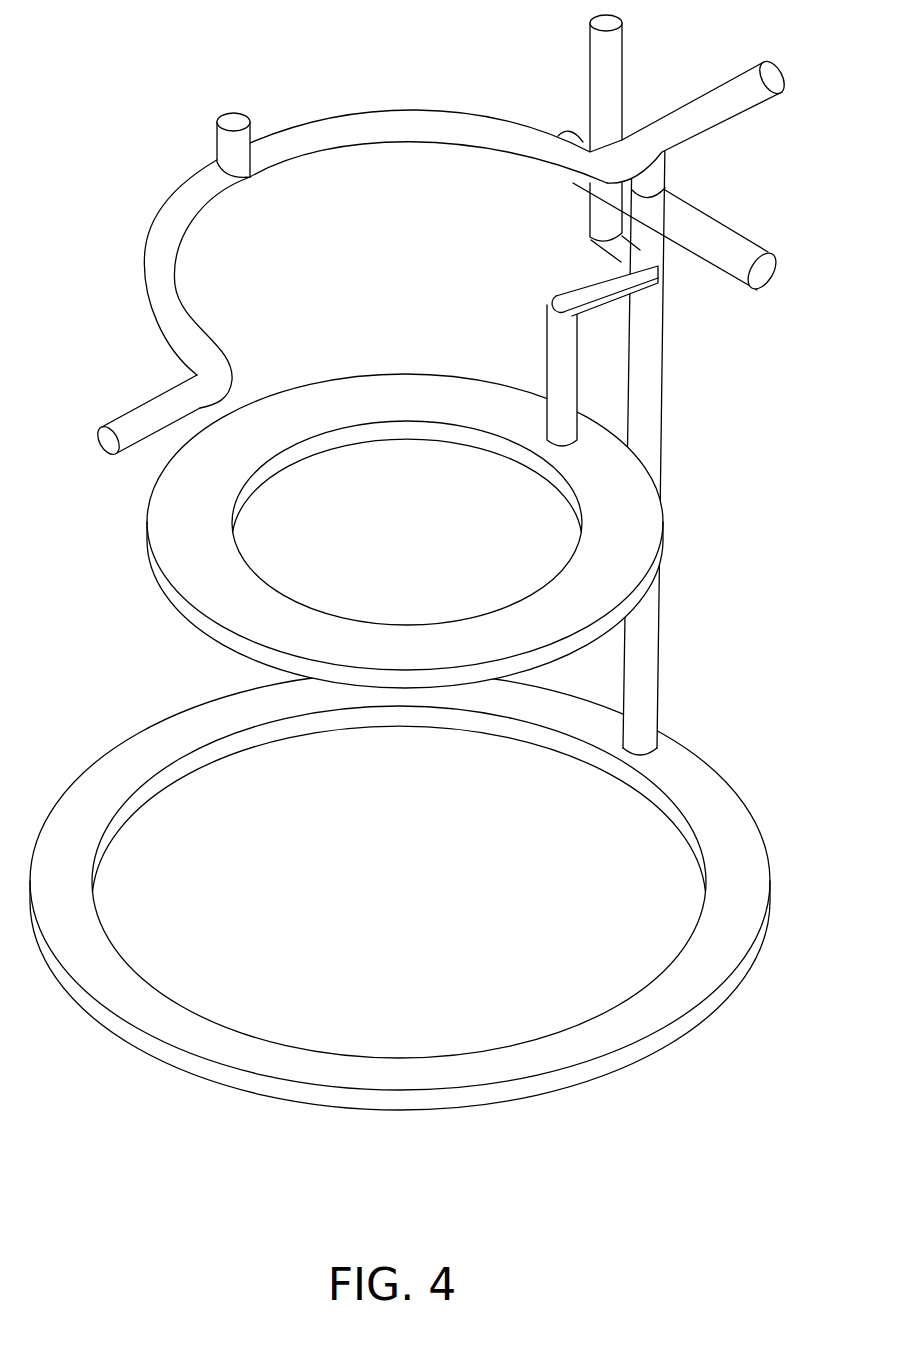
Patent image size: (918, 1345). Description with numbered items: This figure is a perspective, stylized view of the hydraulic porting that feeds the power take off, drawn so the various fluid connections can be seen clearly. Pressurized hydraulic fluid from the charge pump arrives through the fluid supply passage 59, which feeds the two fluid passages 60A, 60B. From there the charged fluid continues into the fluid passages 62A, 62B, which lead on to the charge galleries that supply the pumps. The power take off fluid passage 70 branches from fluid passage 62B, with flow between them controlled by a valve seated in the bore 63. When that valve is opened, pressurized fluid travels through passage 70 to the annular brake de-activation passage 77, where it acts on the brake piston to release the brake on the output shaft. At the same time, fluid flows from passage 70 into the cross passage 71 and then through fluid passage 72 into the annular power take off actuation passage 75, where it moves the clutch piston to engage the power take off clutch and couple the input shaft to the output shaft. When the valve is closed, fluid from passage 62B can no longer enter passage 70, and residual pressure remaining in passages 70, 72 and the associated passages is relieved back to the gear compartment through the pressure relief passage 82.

The fluid supply passage 59 is at (218, 143).
The fluid passage 60A is at (146, 287).
The fluid passage 60B is at (430, 120).
The fluid passage 62A is at (129, 414).
The fluid passage 62B is at (731, 109).
The bore 63 is at (770, 272).
The power take off fluid passage 70 is at (655, 371).
The cross passage 71 is at (592, 282).
The fluid passage 72 is at (555, 357).
The power take off actuation passage 75 is at (603, 537).
The brake de-activation passage 77 is at (718, 892).
The pressure relief passage 82 is at (597, 58).